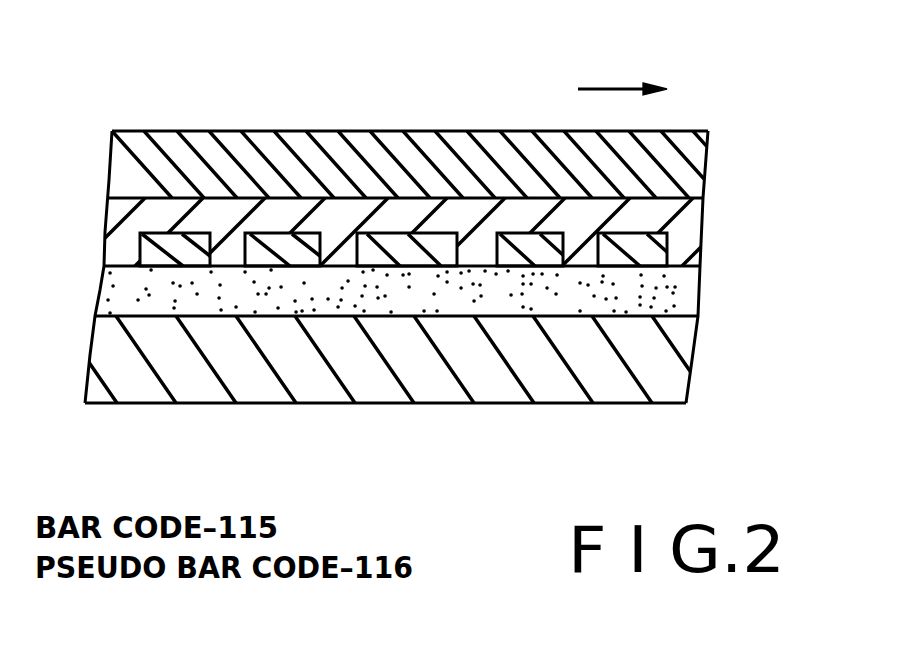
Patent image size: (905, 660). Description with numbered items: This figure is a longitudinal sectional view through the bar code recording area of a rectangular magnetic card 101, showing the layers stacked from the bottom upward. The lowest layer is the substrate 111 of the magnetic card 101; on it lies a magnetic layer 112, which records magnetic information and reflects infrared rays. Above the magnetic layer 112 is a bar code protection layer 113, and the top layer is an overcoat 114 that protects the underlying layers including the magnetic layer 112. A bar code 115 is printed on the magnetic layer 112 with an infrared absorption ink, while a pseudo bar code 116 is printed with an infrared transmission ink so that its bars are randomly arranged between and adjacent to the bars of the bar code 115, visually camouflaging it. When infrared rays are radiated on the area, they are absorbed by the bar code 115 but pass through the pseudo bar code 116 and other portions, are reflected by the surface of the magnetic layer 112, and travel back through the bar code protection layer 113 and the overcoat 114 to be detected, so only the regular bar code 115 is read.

The magnetic card 101 is at (243, 89).
The substrate 111 is at (652, 358).
The magnetic layer 112 is at (648, 288).
The bar code protection layer 113 is at (647, 217).
The overcoat 114 is at (643, 167).
The bar code 115 is at (155, 256).
The pseudo bar code 116 is at (257, 256).